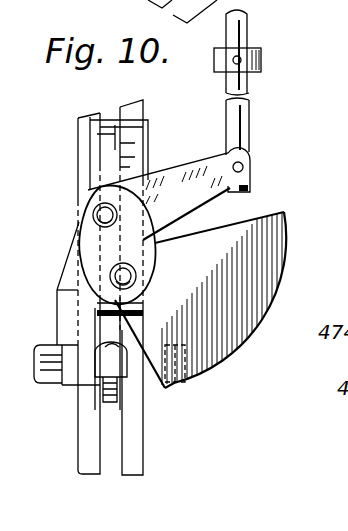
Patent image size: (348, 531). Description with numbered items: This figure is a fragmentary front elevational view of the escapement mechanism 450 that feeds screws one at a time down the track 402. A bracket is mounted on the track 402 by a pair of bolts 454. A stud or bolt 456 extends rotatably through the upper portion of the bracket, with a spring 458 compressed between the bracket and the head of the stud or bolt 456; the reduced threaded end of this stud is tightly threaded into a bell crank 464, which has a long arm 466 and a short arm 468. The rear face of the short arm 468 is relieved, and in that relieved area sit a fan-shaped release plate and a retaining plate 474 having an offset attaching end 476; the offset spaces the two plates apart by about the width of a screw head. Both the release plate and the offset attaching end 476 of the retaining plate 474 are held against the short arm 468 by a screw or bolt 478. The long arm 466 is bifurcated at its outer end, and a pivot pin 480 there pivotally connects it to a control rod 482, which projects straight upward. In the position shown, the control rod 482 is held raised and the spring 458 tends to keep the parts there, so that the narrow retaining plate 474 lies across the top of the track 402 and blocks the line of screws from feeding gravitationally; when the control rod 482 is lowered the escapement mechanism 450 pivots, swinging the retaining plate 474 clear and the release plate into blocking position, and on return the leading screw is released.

The track 402 is at (80, 121).
The bell crank 464 is at (84, 180).
The stud or bolt 456 is at (95, 212).
The spring 458 is at (67, 290).
The offset attaching end 476 is at (95, 305).
The bolts 454 is at (48, 368).
The pivot pin 480 is at (117, 403).
The retaining plate 474 is at (165, 388).
The screw or bolt 478 is at (174, 280).
The long arm 466 is at (194, 155).
The short arm 468 is at (160, 237).
The escapement mechanism 450 is at (259, 198).
The control rod 482 is at (247, 24).